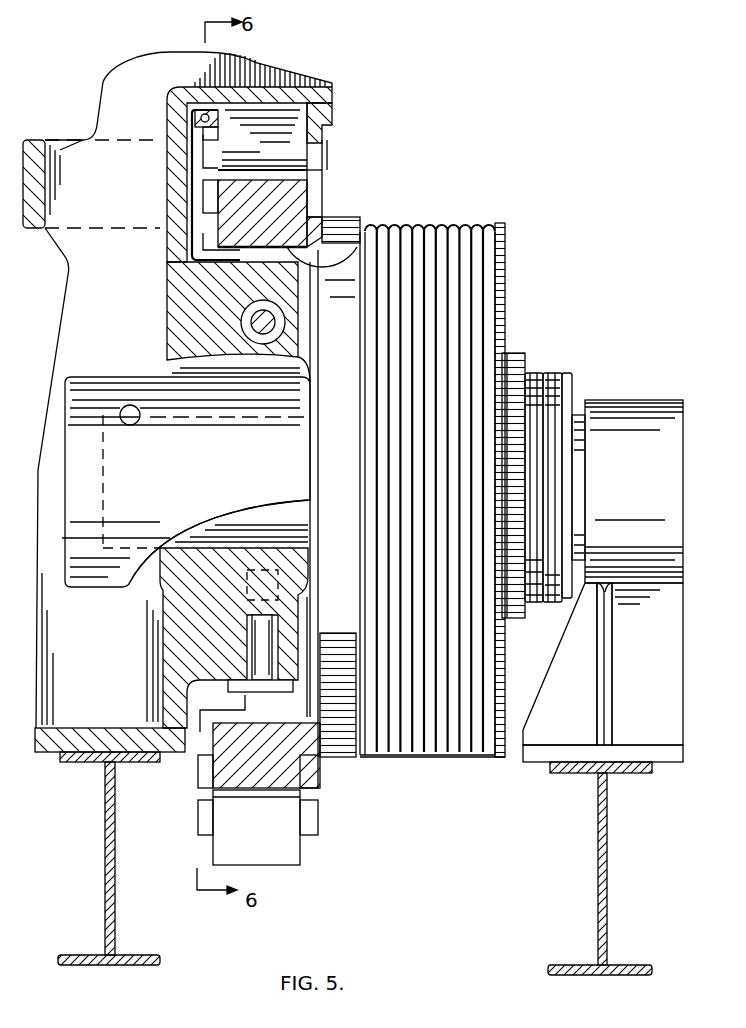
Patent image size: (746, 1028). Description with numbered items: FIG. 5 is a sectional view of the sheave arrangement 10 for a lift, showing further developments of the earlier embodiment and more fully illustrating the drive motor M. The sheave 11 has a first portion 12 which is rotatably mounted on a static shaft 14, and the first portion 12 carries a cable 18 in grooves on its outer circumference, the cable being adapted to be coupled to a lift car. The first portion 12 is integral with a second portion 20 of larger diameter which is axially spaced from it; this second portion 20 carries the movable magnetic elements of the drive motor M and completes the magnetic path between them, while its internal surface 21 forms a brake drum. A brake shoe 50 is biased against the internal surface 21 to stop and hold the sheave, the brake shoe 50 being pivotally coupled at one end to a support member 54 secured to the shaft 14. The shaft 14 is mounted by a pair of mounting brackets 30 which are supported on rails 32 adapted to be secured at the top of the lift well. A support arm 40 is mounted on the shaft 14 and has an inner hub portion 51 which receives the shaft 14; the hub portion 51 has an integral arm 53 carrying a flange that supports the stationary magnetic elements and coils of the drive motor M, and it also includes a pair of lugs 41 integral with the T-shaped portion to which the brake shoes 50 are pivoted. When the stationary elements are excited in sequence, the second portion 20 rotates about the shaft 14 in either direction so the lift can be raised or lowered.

The sheave arrangement 10 is at (535, 217).
The sheave 11 is at (498, 338).
The first portion 12 is at (491, 765).
The static shaft 14 is at (240, 523).
The cable 18 is at (455, 235).
The second portion 20 is at (290, 205).
The internal surface 21 is at (362, 247).
The mounting brackets 30 is at (58, 455).
The rails 32 is at (107, 800).
The support arm 40 is at (195, 310).
The lugs 41 is at (285, 628).
The brake shoe 50 is at (248, 657).
The hub portion 51 is at (140, 388).
The arm 53 is at (103, 273).
The support member 54 is at (125, 103).
The drive motor M is at (343, 137).